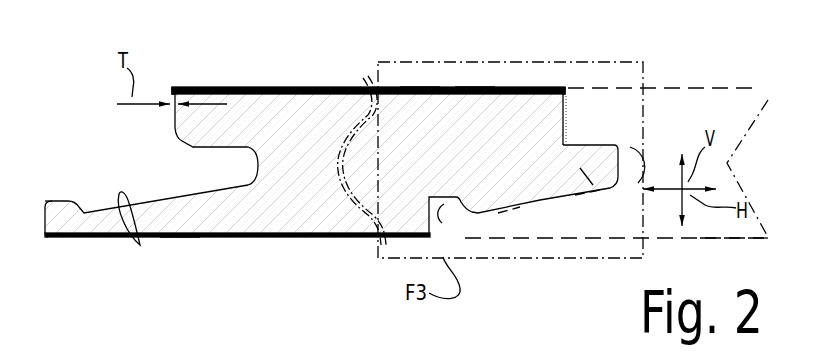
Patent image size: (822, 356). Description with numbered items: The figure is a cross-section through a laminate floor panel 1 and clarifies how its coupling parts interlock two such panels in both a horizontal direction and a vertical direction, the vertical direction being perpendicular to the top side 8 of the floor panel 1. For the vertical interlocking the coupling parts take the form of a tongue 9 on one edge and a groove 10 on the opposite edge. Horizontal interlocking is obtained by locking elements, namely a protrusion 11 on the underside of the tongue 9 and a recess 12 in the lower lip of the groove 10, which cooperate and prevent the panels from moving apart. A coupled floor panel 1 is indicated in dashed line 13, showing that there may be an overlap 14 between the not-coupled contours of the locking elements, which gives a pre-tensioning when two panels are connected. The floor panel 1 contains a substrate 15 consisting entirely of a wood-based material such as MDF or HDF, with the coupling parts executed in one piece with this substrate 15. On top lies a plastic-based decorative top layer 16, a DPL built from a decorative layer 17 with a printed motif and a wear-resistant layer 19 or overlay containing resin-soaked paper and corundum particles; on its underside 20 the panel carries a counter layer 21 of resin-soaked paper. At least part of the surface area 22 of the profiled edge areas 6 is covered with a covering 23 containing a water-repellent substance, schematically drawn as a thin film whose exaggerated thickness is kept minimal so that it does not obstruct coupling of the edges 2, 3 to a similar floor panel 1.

The floor panel 1 is at (293, 80).
The edge 2 is at (668, 123).
The edge 3 is at (112, 137).
The profiled edge area 6 is at (124, 128).
The top side 8 is at (200, 87).
The tongue 9 is at (590, 188).
The groove 10 is at (203, 172).
The protrusion 11 is at (482, 199).
The recess 12 is at (96, 204).
The dashed line 13 is at (730, 238).
The overlap 14 is at (454, 216).
The substrate 15 is at (257, 202).
The decorative top layer 16 is at (576, 91).
The decorative layer 17 is at (423, 93).
The wear-resistant layer 19 is at (473, 92).
The underside 20 is at (304, 239).
The counter layer 21 is at (174, 240).
The surface area 22 is at (140, 247).
The covering 23 is at (171, 89).